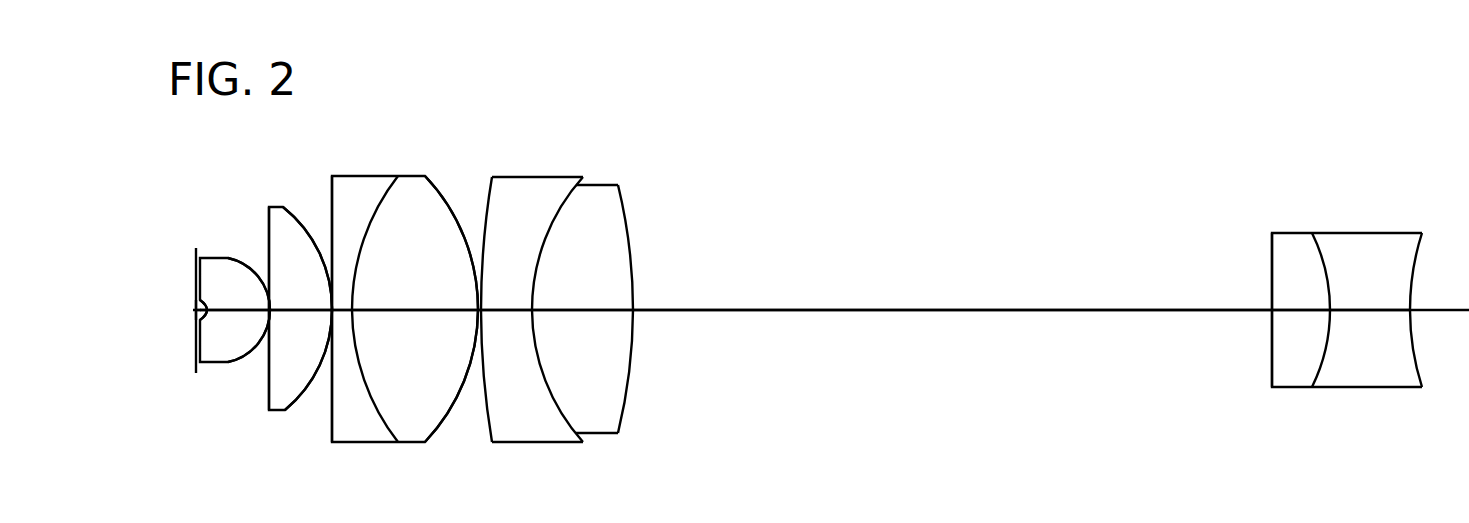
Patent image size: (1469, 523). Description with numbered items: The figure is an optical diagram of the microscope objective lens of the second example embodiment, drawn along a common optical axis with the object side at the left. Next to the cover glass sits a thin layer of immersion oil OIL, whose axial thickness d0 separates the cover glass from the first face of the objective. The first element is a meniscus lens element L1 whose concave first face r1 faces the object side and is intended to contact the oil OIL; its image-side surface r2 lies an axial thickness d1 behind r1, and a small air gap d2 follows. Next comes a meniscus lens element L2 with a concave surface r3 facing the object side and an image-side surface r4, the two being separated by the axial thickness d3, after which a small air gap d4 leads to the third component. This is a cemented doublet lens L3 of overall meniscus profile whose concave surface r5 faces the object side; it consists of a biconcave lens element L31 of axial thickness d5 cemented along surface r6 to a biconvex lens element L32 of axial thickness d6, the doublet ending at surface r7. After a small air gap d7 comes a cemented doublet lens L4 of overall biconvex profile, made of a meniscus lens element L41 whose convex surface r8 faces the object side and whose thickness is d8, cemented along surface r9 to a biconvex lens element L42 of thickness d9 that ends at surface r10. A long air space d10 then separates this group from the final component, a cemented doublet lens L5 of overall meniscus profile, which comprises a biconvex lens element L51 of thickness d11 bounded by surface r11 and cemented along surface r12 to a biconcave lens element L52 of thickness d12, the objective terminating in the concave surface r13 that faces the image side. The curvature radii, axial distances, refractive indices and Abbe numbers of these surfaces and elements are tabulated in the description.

The oil OIL is at (198, 318).
The axial distance of oil d0 is at (200, 308).
The meniscus lens element L1 is at (226, 340).
The concave surface (first face) r1 is at (205, 316).
The lens surface r2 is at (243, 262).
The axial distance d1 is at (235, 296).
The axial distance d2 is at (264, 330).
The meniscus lens element L2 is at (289, 304).
The concave surface r3 is at (268, 248).
The lens surface r4 is at (292, 214).
The axial distance d3 is at (300, 296).
The axial distance d4 is at (330, 340).
The cemented doublet lens L3 is at (473, 62).
The biconcave lens element L31 is at (358, 302).
The biconvex lens element L32 is at (415, 309).
The concave surface r5 is at (332, 210).
The cemented surface r6 is at (388, 196).
The lens surface r7 is at (433, 186).
The axial distance d5 is at (342, 313).
The axial distance d6 is at (415, 297).
The axial distance d7 is at (479, 335).
The cemented doublet lens L4 is at (635, 62).
The meniscus lens element L41 is at (527, 302).
The biconvex lens element L42 is at (590, 304).
The convex surface r8 is at (491, 186).
The cemented surface r9 is at (569, 196).
The lens surface r10 is at (624, 199).
The axial distance d8 is at (506, 296).
The axial distance d9 is at (582, 296).
The axial distance d10 is at (952, 296).
The cemented doublet lens L5 is at (1423, 62).
The biconvex lens element L51 is at (1304, 302).
The biconcave lens element L52 is at (1386, 316).
The lens surface r11 is at (1272, 244).
The cemented surface r12 is at (1318, 248).
The concave surface r13 is at (1415, 265).
The axial distance d11 is at (1301, 295).
The axial distance d12 is at (1370, 295).